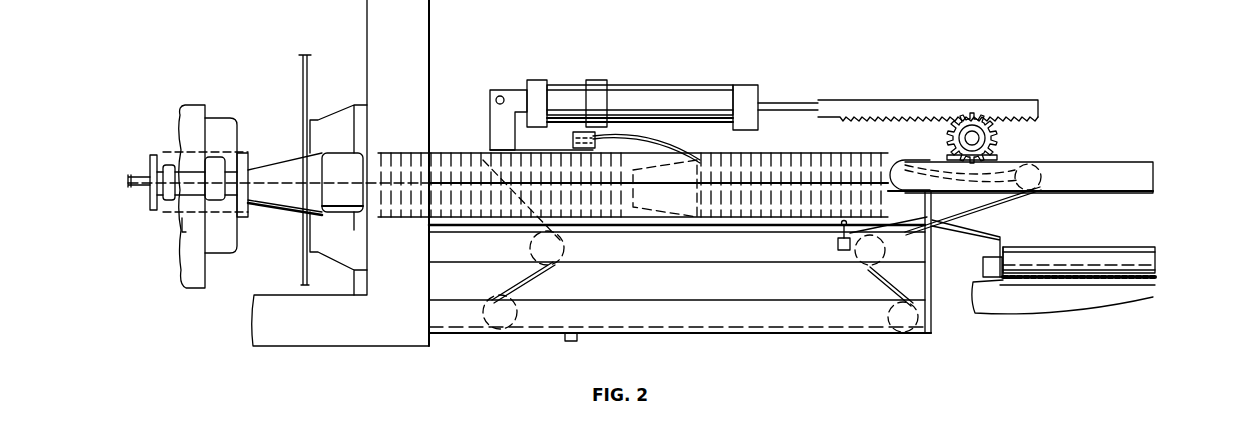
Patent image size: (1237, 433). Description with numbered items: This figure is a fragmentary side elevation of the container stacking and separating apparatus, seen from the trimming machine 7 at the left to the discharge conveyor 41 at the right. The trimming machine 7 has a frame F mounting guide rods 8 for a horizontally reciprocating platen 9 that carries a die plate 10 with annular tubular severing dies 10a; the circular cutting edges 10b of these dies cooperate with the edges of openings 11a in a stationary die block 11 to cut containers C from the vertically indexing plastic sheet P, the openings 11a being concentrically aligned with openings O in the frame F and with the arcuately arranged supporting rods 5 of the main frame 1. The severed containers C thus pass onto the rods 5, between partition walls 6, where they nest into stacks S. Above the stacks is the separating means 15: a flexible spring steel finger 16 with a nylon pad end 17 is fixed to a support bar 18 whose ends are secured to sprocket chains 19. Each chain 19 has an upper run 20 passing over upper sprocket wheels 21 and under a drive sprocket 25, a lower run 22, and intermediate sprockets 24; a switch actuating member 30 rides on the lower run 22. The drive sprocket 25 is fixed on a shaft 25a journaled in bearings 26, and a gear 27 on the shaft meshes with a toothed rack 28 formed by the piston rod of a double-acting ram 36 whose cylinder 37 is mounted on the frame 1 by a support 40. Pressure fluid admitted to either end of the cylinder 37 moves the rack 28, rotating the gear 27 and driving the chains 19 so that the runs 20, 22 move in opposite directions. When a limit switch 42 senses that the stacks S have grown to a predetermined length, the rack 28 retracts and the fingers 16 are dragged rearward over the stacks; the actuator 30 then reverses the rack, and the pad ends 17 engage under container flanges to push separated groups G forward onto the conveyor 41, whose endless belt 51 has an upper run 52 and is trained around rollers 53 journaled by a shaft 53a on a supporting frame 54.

The frame 1 is at (932, 333).
The supporting rods 5 is at (150, 197).
The partition walls 6 is at (633, 212).
The trimming machine 7 is at (432, 344).
The guide rods 8 is at (166, 170).
The reciprocating platen 9 is at (198, 288).
The die plate 10 is at (222, 248).
The severing dies 10a is at (182, 228).
The circular cutting edges 10b is at (255, 218).
The stationary die block 11 is at (330, 118).
The openings 11a is at (338, 228).
The separating means 15 is at (643, 130).
The flexible spring steel finger 16 is at (660, 140).
The nylon pad end 17 is at (700, 165).
The support bar 18 is at (576, 133).
The sprocket chains 19 is at (868, 284).
The upper run 20 is at (900, 160).
The upper sprocket wheels 21 is at (497, 160).
The lower run 22 is at (690, 335).
The intermediate sprockets 24 is at (548, 252).
The drive sprocket 25 is at (1010, 140).
The shaft 25a is at (972, 138).
The bearings 26 is at (1040, 162).
The gear 27 is at (950, 152).
The toothed rack 28 is at (1028, 103).
The switch actuating member 30 is at (566, 338).
The double-acting ram 36 is at (790, 100).
The cylinder 37 is at (650, 100).
The support 40 is at (497, 97).
The discharge conveyor 41 is at (1045, 305).
The limit switch 42 is at (845, 252).
The endless belt 51 is at (1155, 262).
The upper run 52 is at (1110, 247).
The rollers 53 is at (980, 302).
The shaft 53a is at (985, 263).
The supporting frame 54 is at (1002, 247).
The containers C is at (288, 165).
The frame F is at (336, 346).
The groups G is at (740, 163).
The openings O is at (364, 140).
The plastic sheet P is at (308, 72).
The stacks S is at (590, 215).